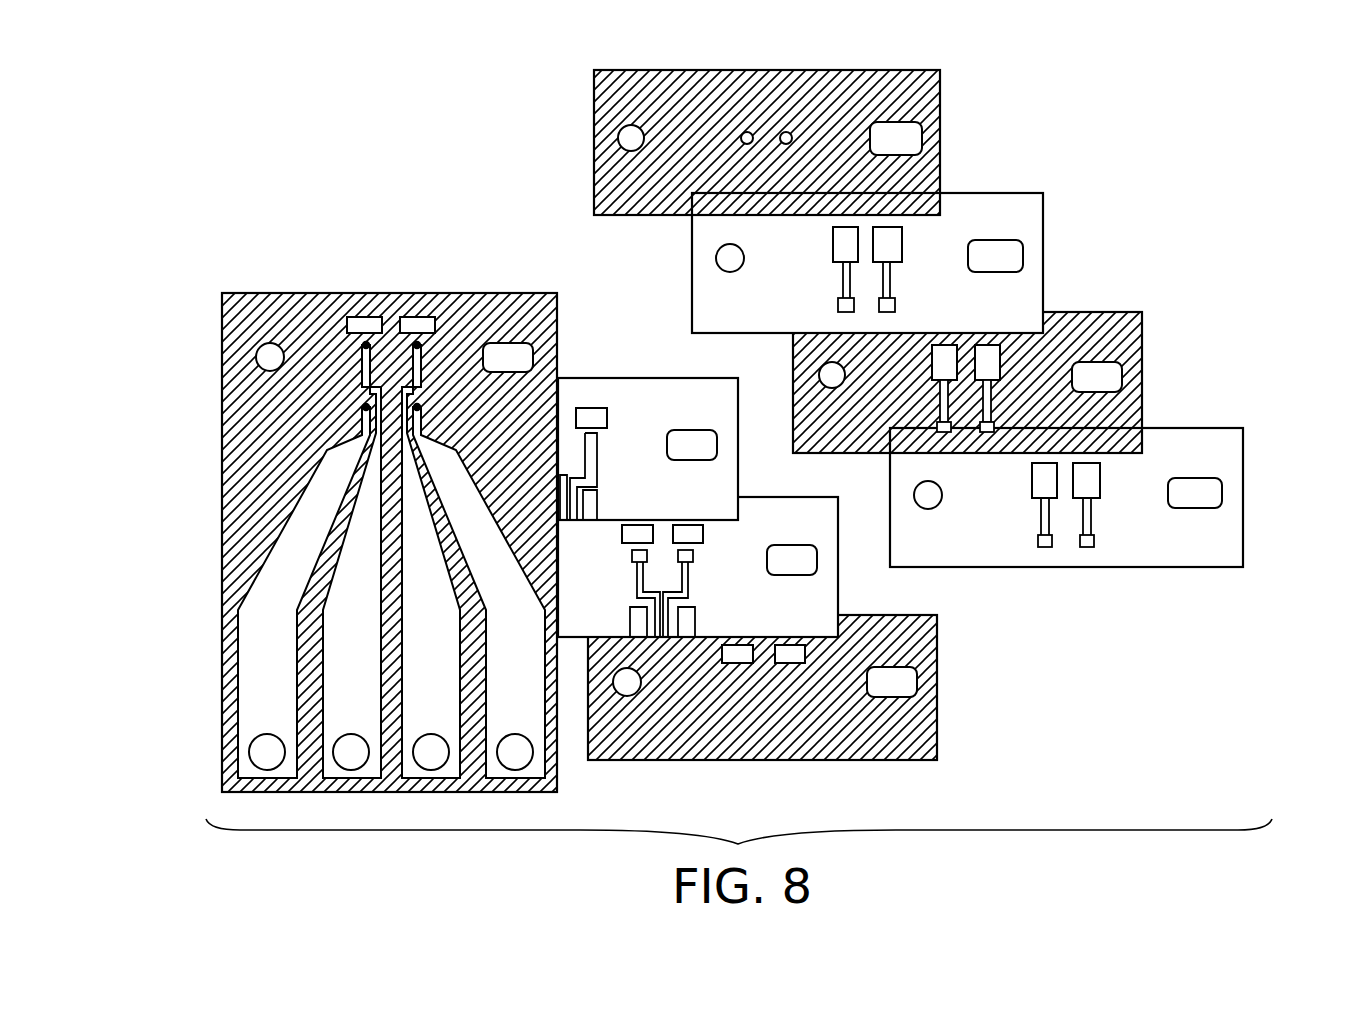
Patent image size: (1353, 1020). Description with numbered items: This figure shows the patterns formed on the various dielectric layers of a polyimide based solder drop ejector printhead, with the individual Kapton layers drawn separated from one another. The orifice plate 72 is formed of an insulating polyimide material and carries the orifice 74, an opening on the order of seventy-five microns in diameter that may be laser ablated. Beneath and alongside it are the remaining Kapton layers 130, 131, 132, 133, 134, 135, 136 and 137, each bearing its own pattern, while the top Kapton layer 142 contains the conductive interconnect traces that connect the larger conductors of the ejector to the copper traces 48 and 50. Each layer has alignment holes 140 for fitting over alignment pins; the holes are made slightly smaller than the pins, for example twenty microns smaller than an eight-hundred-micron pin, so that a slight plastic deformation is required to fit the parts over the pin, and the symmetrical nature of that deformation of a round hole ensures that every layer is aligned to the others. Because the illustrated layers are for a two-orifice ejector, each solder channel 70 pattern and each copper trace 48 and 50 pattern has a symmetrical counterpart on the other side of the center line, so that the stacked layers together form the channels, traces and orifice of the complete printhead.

The top Kapton layer 142 is at (447, 293).
The orifice plate 72 is at (794, 125).
The orifice 74 is at (747, 132).
The Kapton layer 130 is at (870, 247).
The alignment holes 140 is at (716, 257).
The solder channel 70 is at (842, 250).
The Kapton layer 131 is at (1008, 363).
The Kapton layer 133 is at (1008, 382).
The Kapton layer 132 is at (1093, 450).
The Kapton layer 134 is at (1207, 428).
The Kapton layer 136 is at (683, 449).
The copper trace 50 is at (598, 455).
The copper trace 48 is at (598, 500).
The Kapton layer 135 is at (827, 600).
The Kapton layer 137 is at (920, 717).